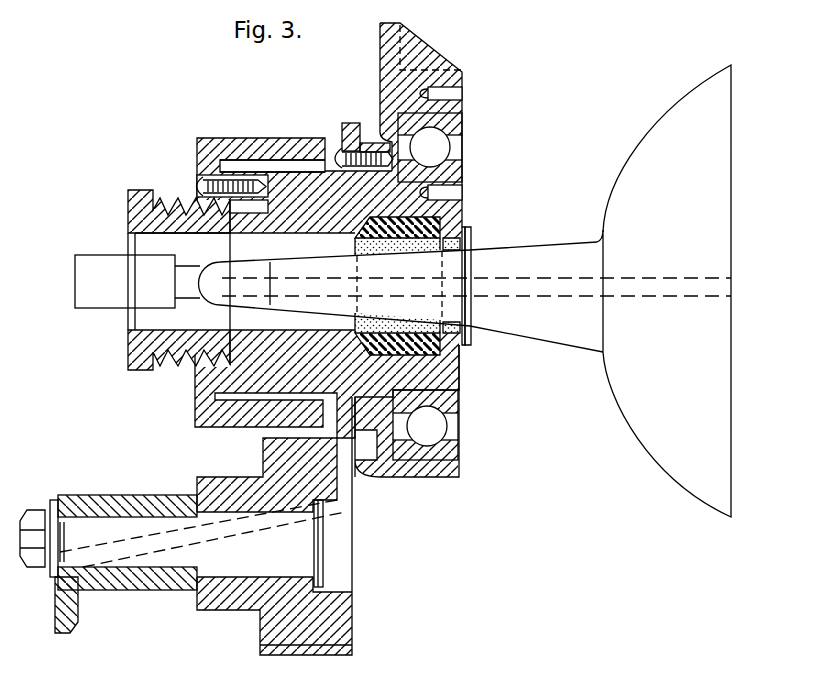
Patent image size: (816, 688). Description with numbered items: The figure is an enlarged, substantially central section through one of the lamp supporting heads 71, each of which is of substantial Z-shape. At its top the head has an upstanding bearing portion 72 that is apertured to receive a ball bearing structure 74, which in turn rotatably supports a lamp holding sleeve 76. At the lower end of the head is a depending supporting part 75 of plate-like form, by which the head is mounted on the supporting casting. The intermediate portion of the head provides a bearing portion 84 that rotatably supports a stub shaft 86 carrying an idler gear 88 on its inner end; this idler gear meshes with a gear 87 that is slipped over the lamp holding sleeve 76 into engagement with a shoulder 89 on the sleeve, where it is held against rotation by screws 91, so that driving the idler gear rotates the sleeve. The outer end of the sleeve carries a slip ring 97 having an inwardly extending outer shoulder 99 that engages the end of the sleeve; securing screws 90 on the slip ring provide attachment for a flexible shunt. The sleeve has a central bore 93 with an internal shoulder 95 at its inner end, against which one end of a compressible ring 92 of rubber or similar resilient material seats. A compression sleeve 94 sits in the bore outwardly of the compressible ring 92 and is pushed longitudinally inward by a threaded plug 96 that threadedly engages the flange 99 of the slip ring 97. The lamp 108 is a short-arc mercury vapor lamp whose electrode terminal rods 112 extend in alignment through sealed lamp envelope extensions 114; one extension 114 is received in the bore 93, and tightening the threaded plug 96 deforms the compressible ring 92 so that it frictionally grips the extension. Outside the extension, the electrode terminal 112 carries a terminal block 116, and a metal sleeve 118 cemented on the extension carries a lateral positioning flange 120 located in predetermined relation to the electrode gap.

The head 71 is at (343, 44).
The upstanding bearing portion 72 is at (430, 55).
The ball bearing structure 74 is at (465, 146).
The depending supporting part 75 is at (62, 612).
The lamp holding sleeve 76 is at (461, 212).
The bearing portion 84 is at (104, 495).
The stub shaft 86 is at (147, 520).
The gear 87 is at (342, 135).
The idler gear 88 is at (341, 624).
The shoulder 89 is at (370, 142).
The securing screws 90 is at (194, 184).
The screws 91 is at (331, 148).
The compressible ring 92 is at (459, 349).
The central bore 93 is at (315, 220).
The compression sleeve 94 is at (344, 347).
The internal shoulder 95 is at (467, 219).
The threaded plug 96 is at (128, 202).
The slip ring 97 is at (227, 140).
The inwardly extending outer shoulder 99 is at (199, 163).
The lamp 108 is at (684, 103).
The electrode terminal rods 112 is at (665, 299).
The lamp envelope extensions 114 is at (565, 259).
The terminal block 116 is at (97, 257).
The metal sleeve 118 is at (453, 312).
The lateral positioning flange 120 is at (471, 238).